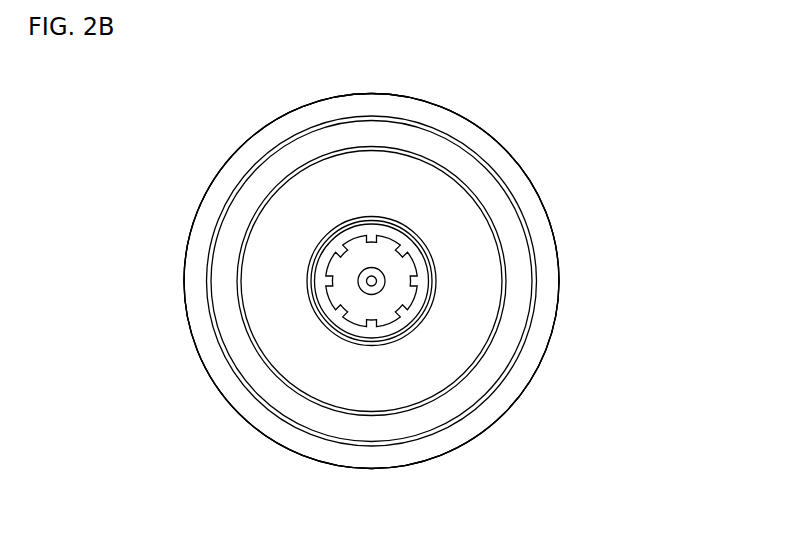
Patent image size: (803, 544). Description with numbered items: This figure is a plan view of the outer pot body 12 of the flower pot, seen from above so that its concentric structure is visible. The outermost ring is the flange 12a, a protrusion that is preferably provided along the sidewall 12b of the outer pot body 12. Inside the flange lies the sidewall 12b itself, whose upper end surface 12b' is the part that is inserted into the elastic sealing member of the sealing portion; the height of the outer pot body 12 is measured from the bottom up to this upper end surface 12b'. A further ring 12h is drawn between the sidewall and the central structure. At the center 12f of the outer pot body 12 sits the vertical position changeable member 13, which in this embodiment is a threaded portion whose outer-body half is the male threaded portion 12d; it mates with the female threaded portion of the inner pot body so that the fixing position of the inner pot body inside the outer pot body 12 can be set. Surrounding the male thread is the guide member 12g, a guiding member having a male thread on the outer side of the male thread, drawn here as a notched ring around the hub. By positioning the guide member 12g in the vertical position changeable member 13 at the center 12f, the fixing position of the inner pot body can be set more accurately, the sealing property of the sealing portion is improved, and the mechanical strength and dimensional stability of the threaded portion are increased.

The outer pot body 12 is at (667, 85).
The flange 12a is at (462, 134).
The sidewall 12b is at (415, 281).
The upper end surface 12b' is at (430, 281).
The male threaded portion 12d is at (372, 281).
The center 12f is at (385, 288).
The guide member 12g is at (408, 316).
The step portion 12h is at (455, 386).
The vertical position changeable member 13 is at (403, 222).